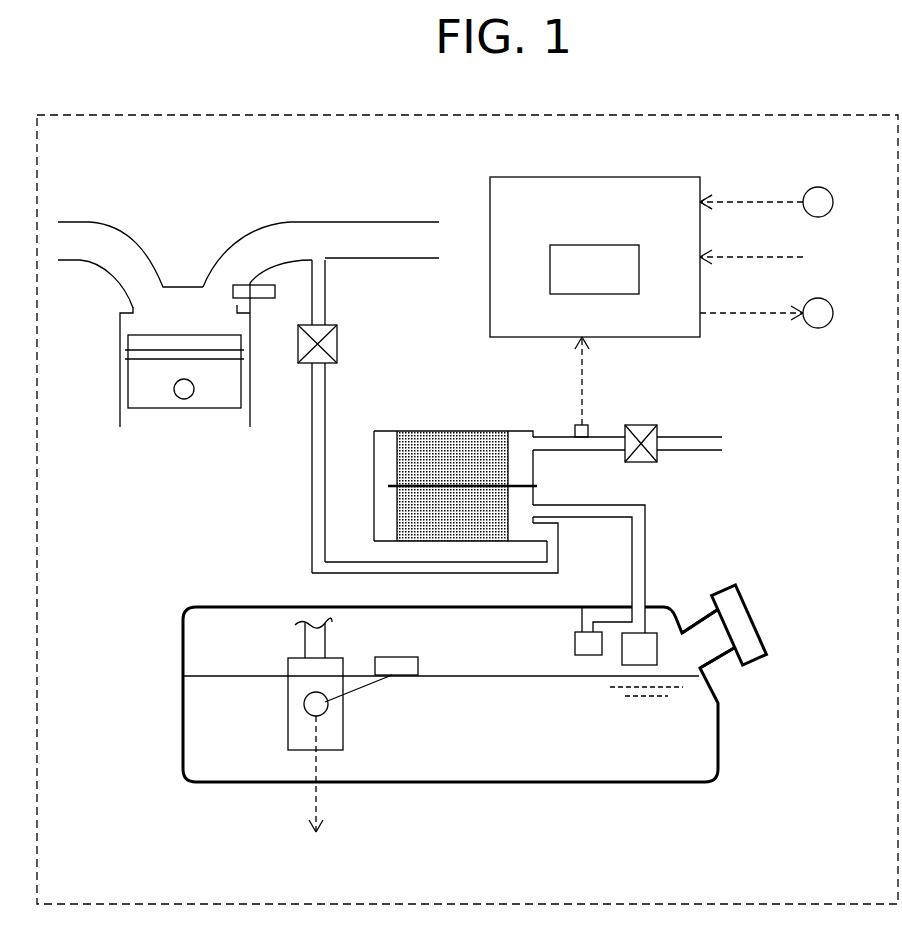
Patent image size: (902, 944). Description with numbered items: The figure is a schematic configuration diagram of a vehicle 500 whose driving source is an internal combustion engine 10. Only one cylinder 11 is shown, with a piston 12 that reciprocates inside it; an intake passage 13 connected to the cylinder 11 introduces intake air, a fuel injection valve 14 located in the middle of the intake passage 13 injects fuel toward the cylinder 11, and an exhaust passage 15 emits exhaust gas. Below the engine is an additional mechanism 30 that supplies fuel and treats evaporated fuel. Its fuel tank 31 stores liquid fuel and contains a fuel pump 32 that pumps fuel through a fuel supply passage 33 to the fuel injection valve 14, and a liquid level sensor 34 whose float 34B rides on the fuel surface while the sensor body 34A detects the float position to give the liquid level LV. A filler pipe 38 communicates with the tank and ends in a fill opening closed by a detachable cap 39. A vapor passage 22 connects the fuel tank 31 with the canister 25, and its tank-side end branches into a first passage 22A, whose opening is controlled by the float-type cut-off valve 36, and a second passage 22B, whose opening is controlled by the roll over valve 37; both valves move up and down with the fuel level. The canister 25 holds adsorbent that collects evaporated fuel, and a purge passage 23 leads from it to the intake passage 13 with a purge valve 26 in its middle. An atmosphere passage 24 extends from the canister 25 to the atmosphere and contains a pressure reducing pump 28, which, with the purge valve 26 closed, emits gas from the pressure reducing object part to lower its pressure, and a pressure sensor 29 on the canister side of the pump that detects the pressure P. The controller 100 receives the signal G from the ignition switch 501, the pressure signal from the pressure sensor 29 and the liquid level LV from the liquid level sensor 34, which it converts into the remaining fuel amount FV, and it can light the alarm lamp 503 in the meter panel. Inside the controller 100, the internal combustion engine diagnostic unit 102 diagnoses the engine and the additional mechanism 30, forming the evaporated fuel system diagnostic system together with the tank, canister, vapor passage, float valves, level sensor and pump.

The internal combustion engine 10 is at (244, 292).
The cylinder 11 is at (118, 330).
The piston 12 is at (127, 390).
The intake passage 13 is at (232, 248).
The fuel injection valve 14 is at (265, 299).
The exhaust passage 15 is at (143, 248).
The vapor passage 22 is at (645, 553).
The first passage 22A is at (575, 621).
The second passage 22B is at (628, 632).
The purge passage 23 is at (558, 547).
The atmosphere passage 24 is at (667, 436).
The canister 25 is at (388, 430).
The purge valve 26 is at (338, 333).
The pressure reducing pump 28 is at (643, 423).
The pressure sensor 29 is at (573, 427).
The additional mechanism 30 is at (482, 707).
The fuel tank 31 is at (592, 782).
The fuel pump 32 is at (288, 727).
The fuel supply passage 33 is at (305, 643).
The liquid level sensor 34 is at (425, 704).
The sensor body 34A is at (318, 715).
The float 34B is at (418, 665).
The cut-off valve 36 is at (592, 656).
The roll over valve 37 is at (657, 653).
The filler pipe 38 is at (717, 663).
The cap 39 is at (768, 648).
The controller 100 is at (595, 235).
The internal combustion engine diagnostic unit 102 is at (595, 245).
The vehicle 500 is at (782, 113).
The ignition switch 501 is at (822, 188).
The alarm lamp 503 is at (822, 328).